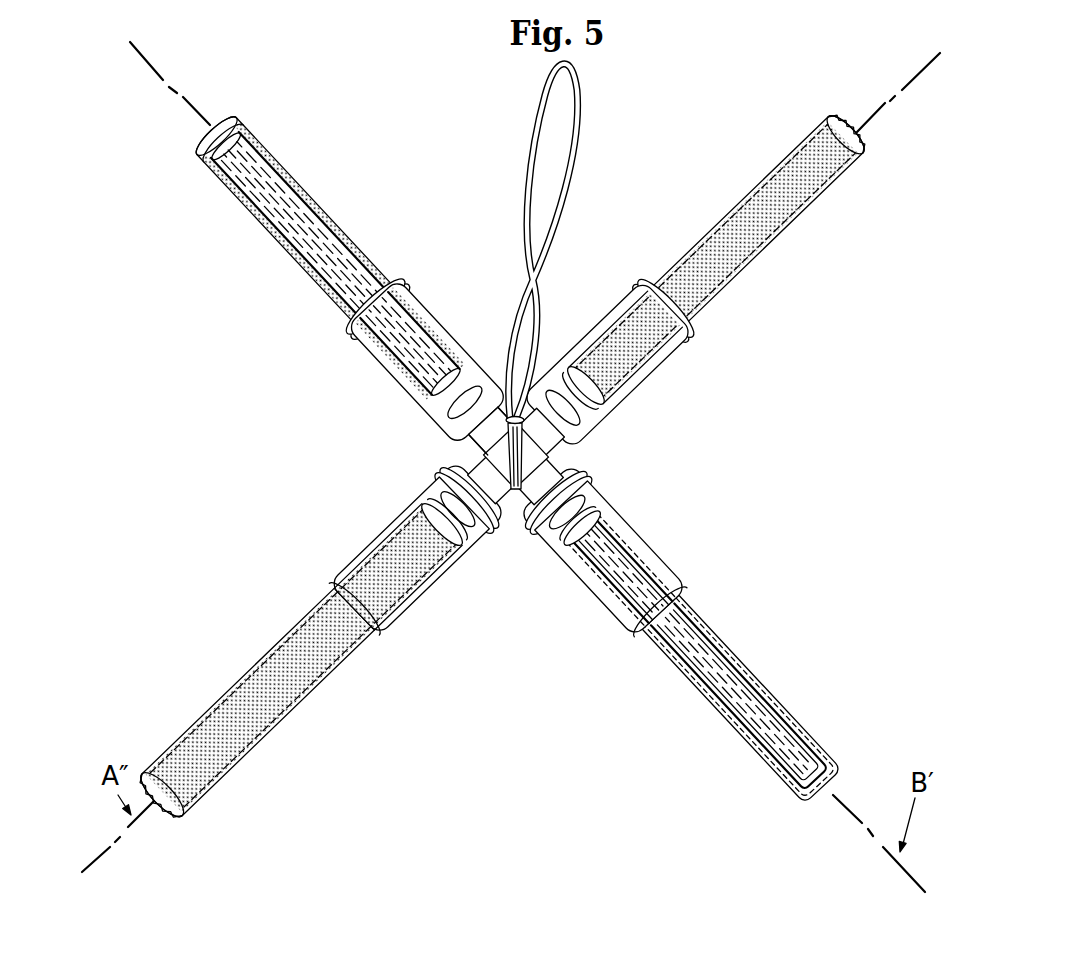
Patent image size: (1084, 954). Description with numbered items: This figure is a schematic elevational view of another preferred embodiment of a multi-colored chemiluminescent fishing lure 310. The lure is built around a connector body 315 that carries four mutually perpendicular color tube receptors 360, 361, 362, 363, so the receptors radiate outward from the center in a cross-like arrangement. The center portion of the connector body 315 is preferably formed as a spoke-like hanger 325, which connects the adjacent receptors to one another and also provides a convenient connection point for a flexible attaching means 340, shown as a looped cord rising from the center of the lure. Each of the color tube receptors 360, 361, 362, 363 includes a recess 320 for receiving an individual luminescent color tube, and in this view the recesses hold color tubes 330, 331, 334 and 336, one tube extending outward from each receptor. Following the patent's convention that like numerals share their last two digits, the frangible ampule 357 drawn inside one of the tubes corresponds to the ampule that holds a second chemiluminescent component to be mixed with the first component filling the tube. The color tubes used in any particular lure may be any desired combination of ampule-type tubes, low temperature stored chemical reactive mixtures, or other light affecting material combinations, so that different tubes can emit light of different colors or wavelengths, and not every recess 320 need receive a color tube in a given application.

The multi-colored fishing lure 310 is at (700, 461).
The connector body 315 is at (566, 453).
The recess 320 is at (567, 384).
The spoke-like hanger 325 is at (492, 453).
The color tube 330 is at (762, 182).
The color tube 331 is at (292, 730).
The color tube 334 is at (673, 672).
The color tube 336 is at (262, 236).
The flexible attaching means 340 is at (538, 108).
The inner liner 357 is at (748, 710).
The color tube receptor 360 is at (410, 604).
The color tube receptor 361 is at (650, 385).
The color tube receptor 362 is at (437, 318).
The color tube receptor 363 is at (681, 583).